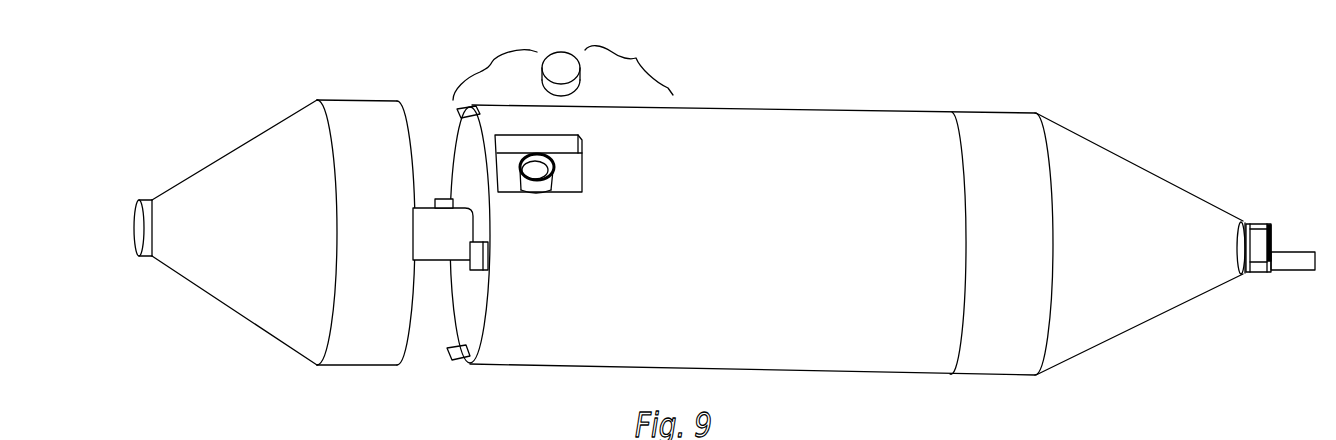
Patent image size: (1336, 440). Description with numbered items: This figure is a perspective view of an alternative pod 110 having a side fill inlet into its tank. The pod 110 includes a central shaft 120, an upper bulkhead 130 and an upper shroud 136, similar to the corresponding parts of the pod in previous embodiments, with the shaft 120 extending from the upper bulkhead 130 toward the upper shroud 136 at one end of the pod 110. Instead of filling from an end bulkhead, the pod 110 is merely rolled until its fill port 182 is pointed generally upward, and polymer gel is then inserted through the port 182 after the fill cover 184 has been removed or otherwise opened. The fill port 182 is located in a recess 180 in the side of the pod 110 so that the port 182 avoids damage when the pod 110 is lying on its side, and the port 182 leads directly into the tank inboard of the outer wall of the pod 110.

The pod 110 is at (812, 92).
The central shaft 120 is at (430, 222).
The upper bulkhead 130 is at (463, 314).
The upper shroud 136 is at (283, 221).
The recess 180 is at (563, 181).
The fill port 182 is at (533, 181).
The fill cover 184 is at (565, 62).